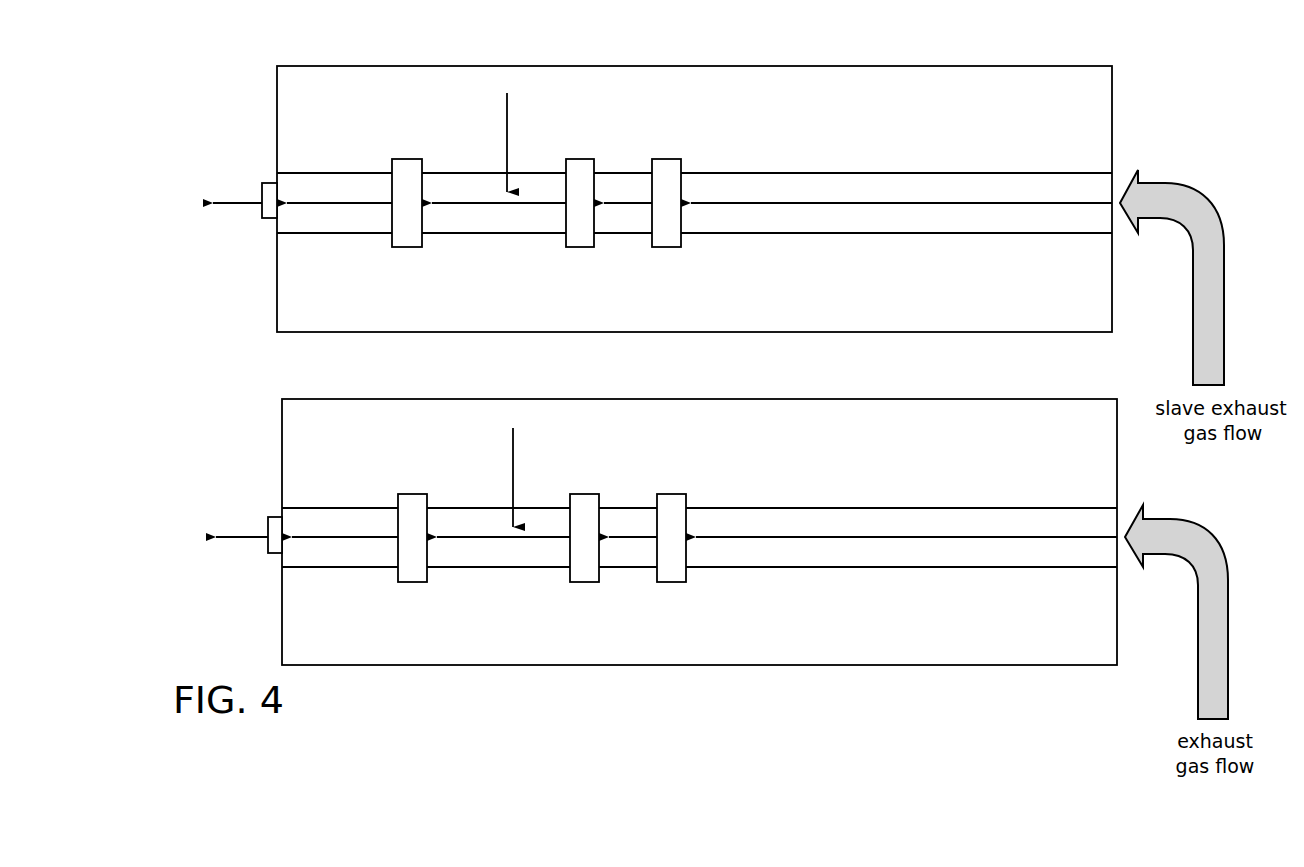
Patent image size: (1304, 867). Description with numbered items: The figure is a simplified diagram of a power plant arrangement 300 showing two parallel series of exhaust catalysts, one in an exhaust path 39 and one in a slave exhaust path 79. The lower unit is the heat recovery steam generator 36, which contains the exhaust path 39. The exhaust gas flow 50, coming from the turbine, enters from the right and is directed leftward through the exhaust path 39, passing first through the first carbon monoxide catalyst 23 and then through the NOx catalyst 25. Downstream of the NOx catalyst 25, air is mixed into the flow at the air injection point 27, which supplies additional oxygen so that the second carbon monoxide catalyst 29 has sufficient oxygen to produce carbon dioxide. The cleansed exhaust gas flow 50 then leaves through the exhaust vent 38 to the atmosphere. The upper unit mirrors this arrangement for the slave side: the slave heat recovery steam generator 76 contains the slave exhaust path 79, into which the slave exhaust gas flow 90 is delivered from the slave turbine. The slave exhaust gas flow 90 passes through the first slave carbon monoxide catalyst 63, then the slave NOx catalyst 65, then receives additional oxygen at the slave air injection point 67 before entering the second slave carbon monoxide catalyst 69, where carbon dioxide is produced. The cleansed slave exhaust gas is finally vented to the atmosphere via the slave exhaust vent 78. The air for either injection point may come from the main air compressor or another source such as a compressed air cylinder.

The power plant arrangement 300 is at (200, 421).
The heat recovery steam generator 36 is at (782, 665).
The exhaust vent 38 is at (268, 553).
The exhaust path 39 is at (830, 507).
The exhaust gas flow 50 is at (958, 536).
The first carbon monoxide catalyst 23 is at (672, 493).
The NOx catalyst 25 is at (585, 493).
The air injection point 27 is at (512, 465).
The second carbon monoxide catalyst 29 is at (413, 493).
The slave heat recovery steam generator 76 is at (1113, 147).
The slave exhaust vent 78 is at (262, 218).
The slave exhaust path 79 is at (825, 172).
The slave exhaust gas flow 90 is at (955, 202).
The first slave carbon monoxide catalyst 63 is at (667, 158).
The slave NOx catalyst 65 is at (580, 158).
The slave air injection point 67 is at (507, 130).
The second slave carbon monoxide catalyst 69 is at (407, 158).